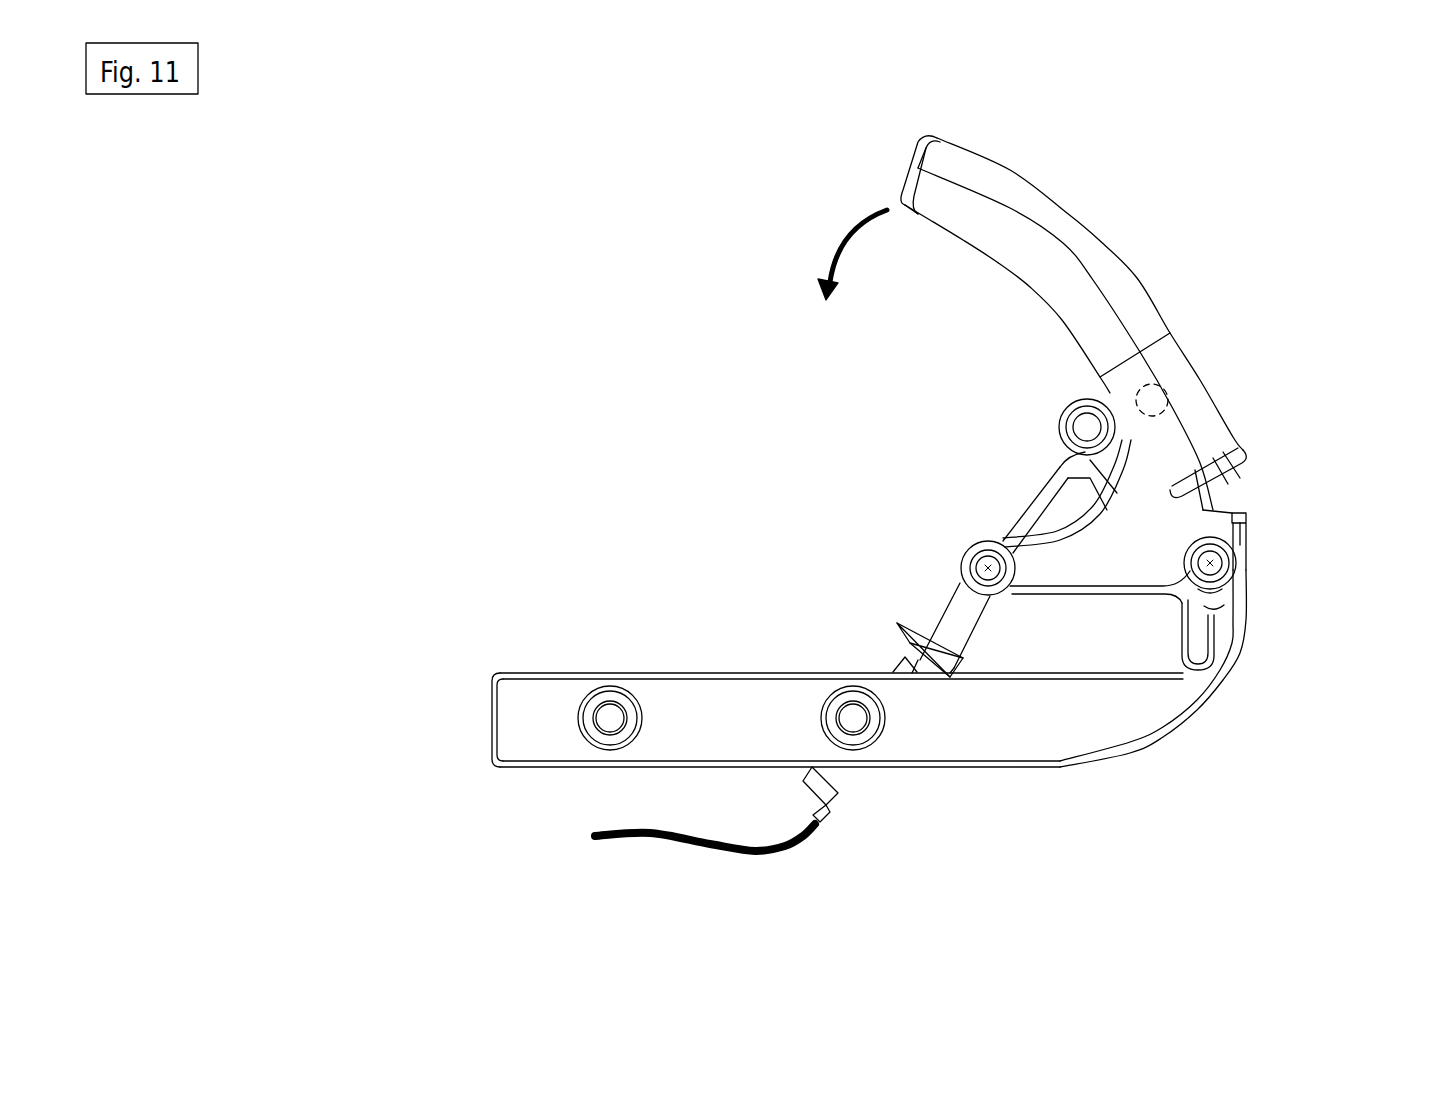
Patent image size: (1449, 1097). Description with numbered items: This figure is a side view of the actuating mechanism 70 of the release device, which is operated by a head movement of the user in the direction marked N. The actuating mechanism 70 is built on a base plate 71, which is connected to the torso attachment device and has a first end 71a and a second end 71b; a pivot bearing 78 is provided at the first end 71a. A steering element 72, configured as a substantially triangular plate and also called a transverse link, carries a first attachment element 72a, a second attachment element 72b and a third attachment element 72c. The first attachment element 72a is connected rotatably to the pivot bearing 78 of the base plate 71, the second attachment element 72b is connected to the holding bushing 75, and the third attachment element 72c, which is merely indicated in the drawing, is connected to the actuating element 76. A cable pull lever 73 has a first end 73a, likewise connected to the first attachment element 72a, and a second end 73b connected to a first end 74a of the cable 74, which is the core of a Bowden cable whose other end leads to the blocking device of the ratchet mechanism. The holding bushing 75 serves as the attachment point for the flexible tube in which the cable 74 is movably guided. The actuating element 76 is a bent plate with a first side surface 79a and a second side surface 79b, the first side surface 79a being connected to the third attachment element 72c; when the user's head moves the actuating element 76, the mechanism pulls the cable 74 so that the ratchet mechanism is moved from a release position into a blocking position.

The actuating mechanism 70 is at (570, 336).
The base plate 71 is at (727, 705).
The first end 71a is at (1247, 527).
The second end 71b is at (510, 720).
The steering element 72 is at (1183, 513).
The first attachment element 72a is at (1222, 587).
The second attachment element 72b is at (968, 553).
The third attachment element 72c is at (1083, 430).
The cable pull lever 73 is at (1075, 462).
The first end 73a is at (1222, 607).
The second end 73b is at (1065, 407).
The cable 74 is at (813, 833).
The first end 74a is at (1078, 458).
The holding bushing 75 is at (945, 613).
The actuating element 76 is at (1143, 305).
The pivot bearing 78 is at (1230, 567).
The first side surface 79a is at (1057, 320).
The second side surface 79b is at (1098, 238).